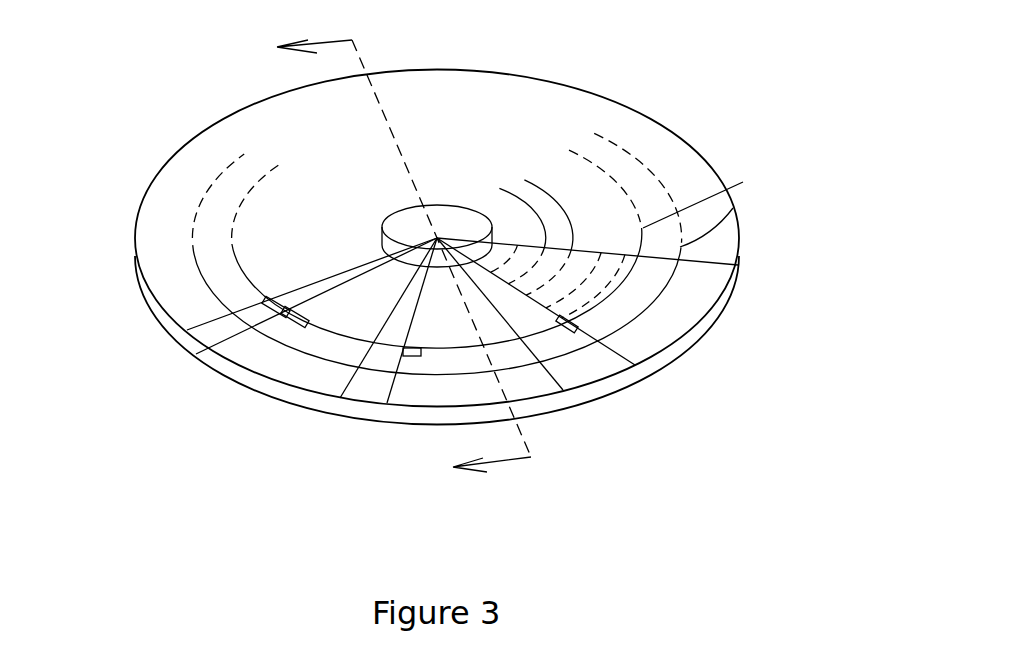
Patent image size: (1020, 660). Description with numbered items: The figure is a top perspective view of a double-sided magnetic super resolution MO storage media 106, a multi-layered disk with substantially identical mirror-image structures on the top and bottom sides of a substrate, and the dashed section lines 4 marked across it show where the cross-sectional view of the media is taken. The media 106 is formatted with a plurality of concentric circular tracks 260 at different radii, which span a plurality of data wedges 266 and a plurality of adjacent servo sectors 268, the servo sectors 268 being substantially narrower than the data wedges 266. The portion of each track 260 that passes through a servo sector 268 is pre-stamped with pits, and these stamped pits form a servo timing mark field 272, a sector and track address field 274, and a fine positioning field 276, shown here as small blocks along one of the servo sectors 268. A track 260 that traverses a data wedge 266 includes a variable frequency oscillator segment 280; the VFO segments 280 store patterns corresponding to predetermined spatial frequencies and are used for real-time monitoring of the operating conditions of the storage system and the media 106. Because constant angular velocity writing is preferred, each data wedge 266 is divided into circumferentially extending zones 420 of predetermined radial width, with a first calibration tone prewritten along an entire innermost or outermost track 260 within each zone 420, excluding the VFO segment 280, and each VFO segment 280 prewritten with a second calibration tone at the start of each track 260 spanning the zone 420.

The magnetic super resolution MO storage media 106 is at (440, 246).
The concentric circular tracks 260 is at (738, 217).
The data wedges 266 is at (697, 303).
The servo sectors 268 is at (203, 333).
The servo timing mark field 272 is at (265, 297).
The sector and track address field 274 is at (281, 308).
The fine positioning field 276 is at (197, 355).
The variable frequency oscillator segment 280 is at (310, 321).
The circumferentially extending zones 420 is at (503, 185).
The section lines 4— 4 is at (394, 259).